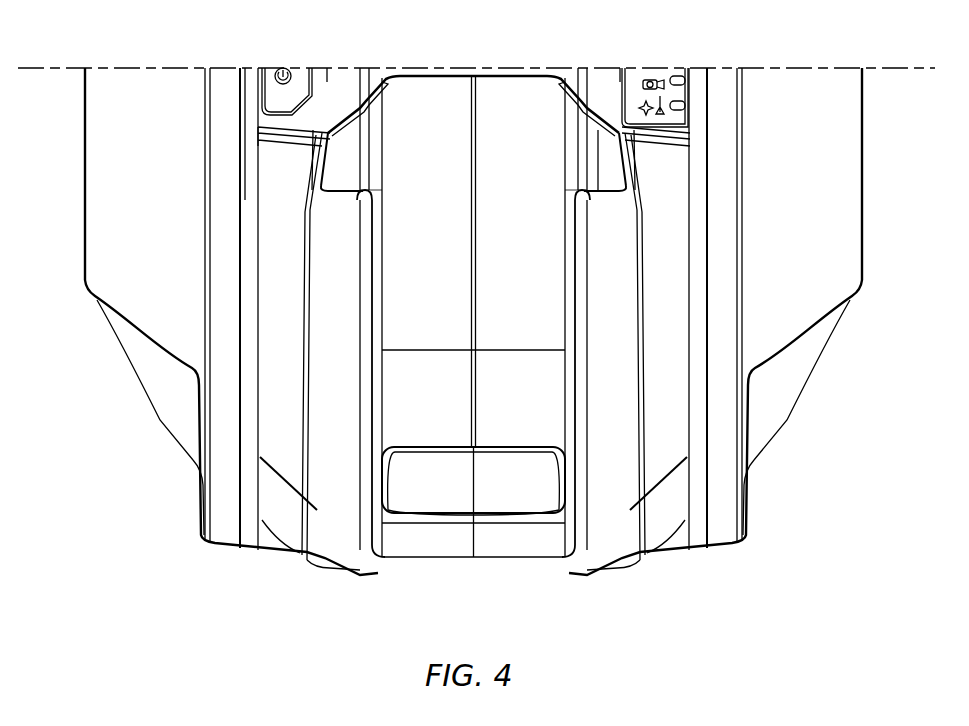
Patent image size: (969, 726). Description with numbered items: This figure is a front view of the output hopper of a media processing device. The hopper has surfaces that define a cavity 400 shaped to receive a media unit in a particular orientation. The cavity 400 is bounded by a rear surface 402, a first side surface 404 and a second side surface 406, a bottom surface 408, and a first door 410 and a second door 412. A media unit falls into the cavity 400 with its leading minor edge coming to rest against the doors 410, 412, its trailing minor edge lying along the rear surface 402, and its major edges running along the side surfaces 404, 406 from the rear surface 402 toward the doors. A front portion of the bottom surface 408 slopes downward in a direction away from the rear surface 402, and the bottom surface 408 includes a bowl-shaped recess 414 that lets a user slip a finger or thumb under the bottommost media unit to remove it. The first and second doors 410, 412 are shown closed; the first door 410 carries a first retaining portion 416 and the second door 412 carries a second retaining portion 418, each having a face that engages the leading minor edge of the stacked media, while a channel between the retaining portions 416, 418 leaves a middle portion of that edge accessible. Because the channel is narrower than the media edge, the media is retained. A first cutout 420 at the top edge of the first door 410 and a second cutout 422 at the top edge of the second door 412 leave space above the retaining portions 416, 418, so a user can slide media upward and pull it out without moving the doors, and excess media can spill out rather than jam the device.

The cavity 400 is at (456, 248).
The rear surface 402 is at (525, 98).
The first side surface 404 is at (352, 132).
The second side surface 406 is at (585, 157).
The bottom surface 408 is at (470, 409).
The first door 410 is at (277, 289).
The second door 412 is at (668, 280).
The recess 414 is at (430, 488).
The first retaining portion 416 is at (347, 518).
The second retaining portion 418 is at (603, 518).
The first cutout 420 is at (345, 188).
The second cutout 422 is at (600, 192).